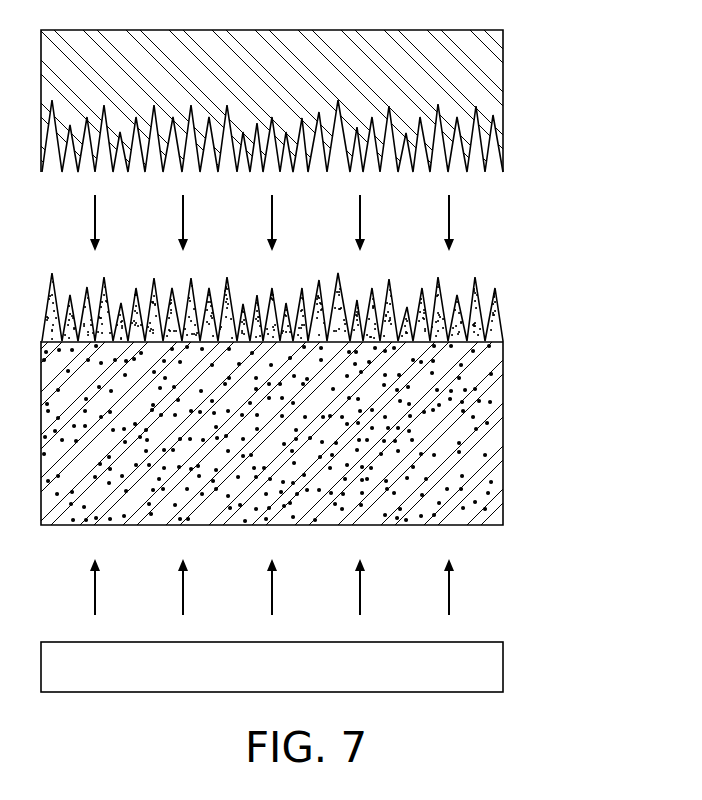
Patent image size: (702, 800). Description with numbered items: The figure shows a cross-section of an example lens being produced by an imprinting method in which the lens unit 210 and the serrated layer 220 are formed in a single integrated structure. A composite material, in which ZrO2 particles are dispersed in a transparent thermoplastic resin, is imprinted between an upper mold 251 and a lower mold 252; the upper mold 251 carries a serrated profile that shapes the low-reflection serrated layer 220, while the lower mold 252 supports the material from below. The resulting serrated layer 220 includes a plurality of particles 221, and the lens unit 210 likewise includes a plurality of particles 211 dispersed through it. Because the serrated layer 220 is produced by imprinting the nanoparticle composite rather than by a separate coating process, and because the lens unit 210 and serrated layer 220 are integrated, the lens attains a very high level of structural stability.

The upper mold 251 is at (497, 78).
The lower mold 252 is at (497, 668).
The lens unit 210 is at (498, 430).
The particles 211 is at (472, 465).
The serrated layer 220 is at (500, 328).
The particles 221 is at (497, 300).